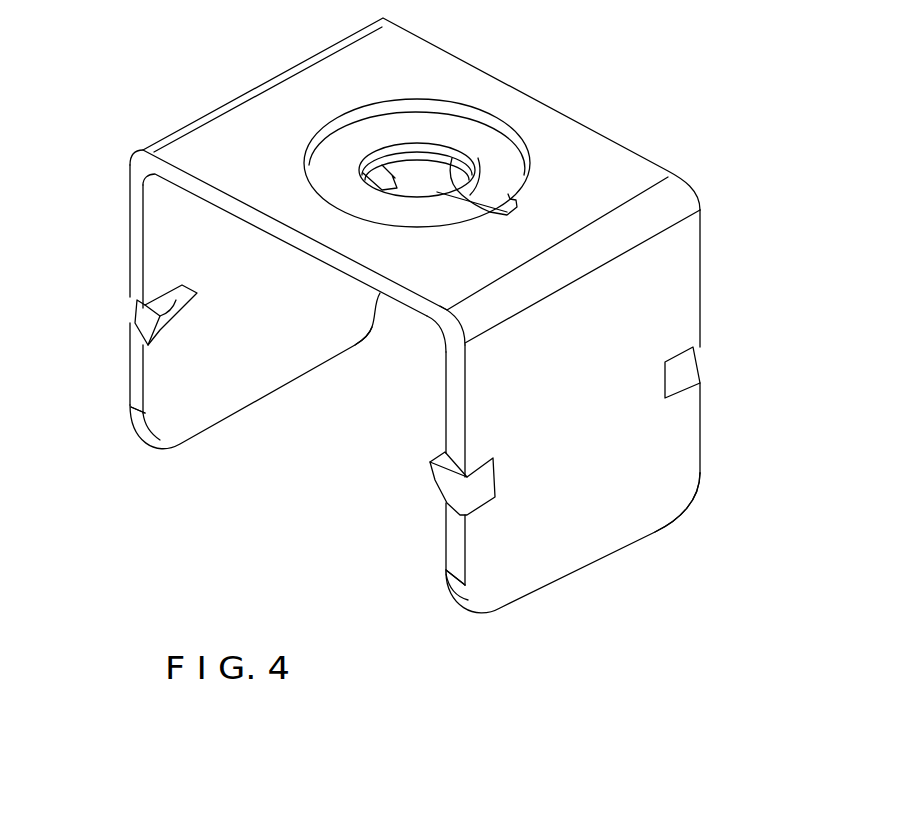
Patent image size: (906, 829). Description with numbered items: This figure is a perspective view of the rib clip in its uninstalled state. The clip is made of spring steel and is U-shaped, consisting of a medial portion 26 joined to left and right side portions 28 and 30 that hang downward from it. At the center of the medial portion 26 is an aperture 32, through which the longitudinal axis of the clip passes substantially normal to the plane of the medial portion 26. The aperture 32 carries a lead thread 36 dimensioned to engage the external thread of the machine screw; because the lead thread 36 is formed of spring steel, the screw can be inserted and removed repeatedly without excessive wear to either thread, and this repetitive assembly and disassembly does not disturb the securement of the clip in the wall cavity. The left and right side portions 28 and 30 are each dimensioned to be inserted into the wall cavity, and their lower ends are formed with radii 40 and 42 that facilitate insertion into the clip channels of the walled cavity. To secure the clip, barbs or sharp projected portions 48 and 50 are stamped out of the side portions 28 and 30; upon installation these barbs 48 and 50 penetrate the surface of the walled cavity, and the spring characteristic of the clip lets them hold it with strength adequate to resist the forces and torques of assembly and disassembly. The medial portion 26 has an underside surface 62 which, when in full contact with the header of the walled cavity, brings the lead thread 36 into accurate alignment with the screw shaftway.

The medial portion 26 is at (262, 113).
The left side portion 28 is at (655, 300).
The right side portion 30 is at (163, 230).
The aperture 32 is at (420, 185).
The lead thread 36 is at (446, 208).
The radius 40 is at (460, 620).
The radius 42 is at (380, 330).
The barb 48 is at (430, 462).
The barb 50 is at (137, 322).
The underside surface 62 is at (405, 308).